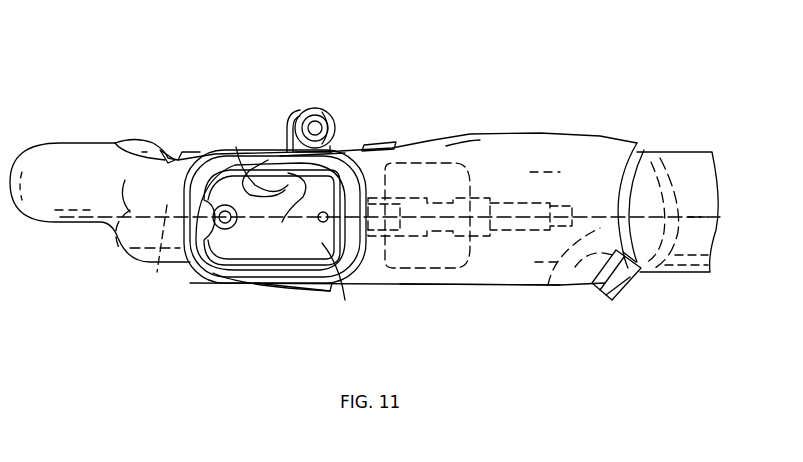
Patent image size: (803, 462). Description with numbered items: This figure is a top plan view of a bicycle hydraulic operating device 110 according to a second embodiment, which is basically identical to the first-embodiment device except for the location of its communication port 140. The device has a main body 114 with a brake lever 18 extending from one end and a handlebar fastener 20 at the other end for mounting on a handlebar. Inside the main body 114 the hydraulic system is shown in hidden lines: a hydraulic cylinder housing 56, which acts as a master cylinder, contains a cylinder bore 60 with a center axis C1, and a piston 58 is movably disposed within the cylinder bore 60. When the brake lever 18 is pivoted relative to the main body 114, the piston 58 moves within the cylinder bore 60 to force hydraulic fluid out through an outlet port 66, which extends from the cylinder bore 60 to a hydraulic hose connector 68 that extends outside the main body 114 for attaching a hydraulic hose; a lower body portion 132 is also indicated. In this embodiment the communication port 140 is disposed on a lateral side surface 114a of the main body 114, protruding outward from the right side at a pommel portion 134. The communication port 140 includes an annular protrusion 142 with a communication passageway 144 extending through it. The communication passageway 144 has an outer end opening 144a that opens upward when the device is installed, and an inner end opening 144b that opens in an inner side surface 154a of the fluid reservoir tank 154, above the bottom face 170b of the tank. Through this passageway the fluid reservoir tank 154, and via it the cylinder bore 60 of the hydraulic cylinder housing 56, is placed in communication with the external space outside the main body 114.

The brake lever 18 is at (59, 143).
The handlebar fastener 20 is at (666, 160).
The hydraulic cylinder housing 56 is at (448, 148).
The piston 58 is at (440, 232).
The cylinder bore 60 is at (493, 196).
The outlet port 66 is at (561, 272).
The hydraulic hose connector 68 is at (626, 298).
The bicycle hydraulic operating device 110 is at (462, 53).
The main body 114 is at (541, 133).
The lateral side surface 114a is at (362, 146).
The lower body portion 132 is at (516, 285).
The pommel portion 134 is at (294, 295).
The communication port 140 is at (321, 106).
The annular protrusion 142 is at (292, 118).
The communication passageway 144 is at (281, 120).
The outer end opening 144a is at (333, 112).
The inner end opening 144b is at (248, 162).
The fluid reservoir tank 154 is at (241, 290).
The inner side surface 154a is at (284, 222).
The bottom face 170b is at (346, 282).
The center axis C1 is at (155, 250).